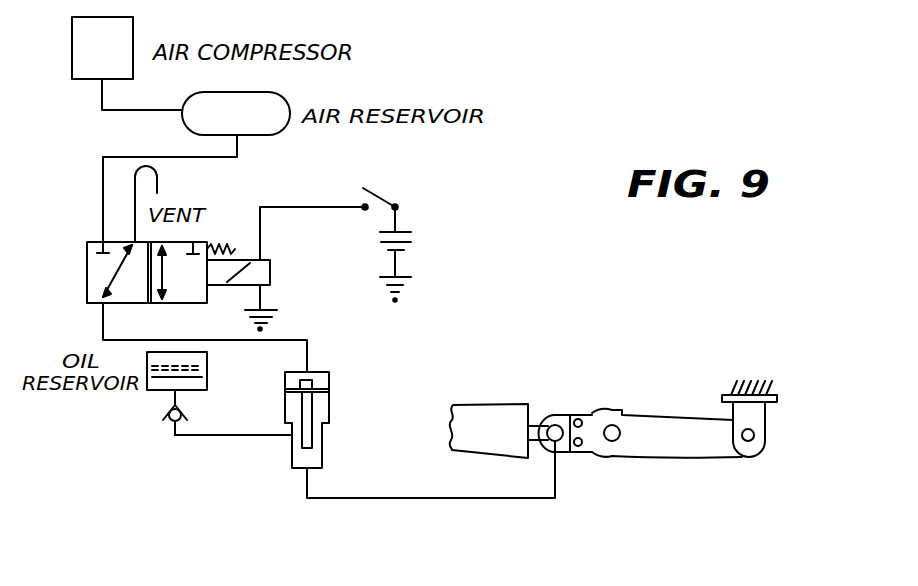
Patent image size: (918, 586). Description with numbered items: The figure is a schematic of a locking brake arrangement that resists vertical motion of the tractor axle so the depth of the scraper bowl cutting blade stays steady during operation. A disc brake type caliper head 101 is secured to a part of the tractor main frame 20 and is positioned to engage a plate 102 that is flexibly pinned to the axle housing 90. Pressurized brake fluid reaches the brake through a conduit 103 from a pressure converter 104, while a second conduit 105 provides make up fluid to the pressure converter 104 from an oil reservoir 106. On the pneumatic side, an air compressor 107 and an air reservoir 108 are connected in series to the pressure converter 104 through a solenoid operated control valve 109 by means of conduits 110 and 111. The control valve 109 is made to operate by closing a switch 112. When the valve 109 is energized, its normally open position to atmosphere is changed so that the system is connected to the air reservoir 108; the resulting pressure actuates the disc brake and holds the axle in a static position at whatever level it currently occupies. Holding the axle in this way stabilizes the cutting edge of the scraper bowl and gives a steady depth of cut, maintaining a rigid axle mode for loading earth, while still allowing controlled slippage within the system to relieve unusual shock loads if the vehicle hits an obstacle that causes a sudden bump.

The tractor main frame 20 is at (476, 404).
The axle housing 90 is at (612, 441).
The caliper head 101 is at (540, 424).
The plate 102 is at (567, 413).
The conduit 103 is at (392, 499).
The pressure converter 104 is at (329, 410).
The conduit 105 is at (242, 436).
The oil reservoir 106 is at (156, 391).
The air compressor 107 is at (133, 38).
The air reservoir 108 is at (271, 136).
The control valve 109 is at (87, 275).
The conduit 110 is at (103, 178).
The conduit 111 is at (148, 338).
The switch 112 is at (392, 189).